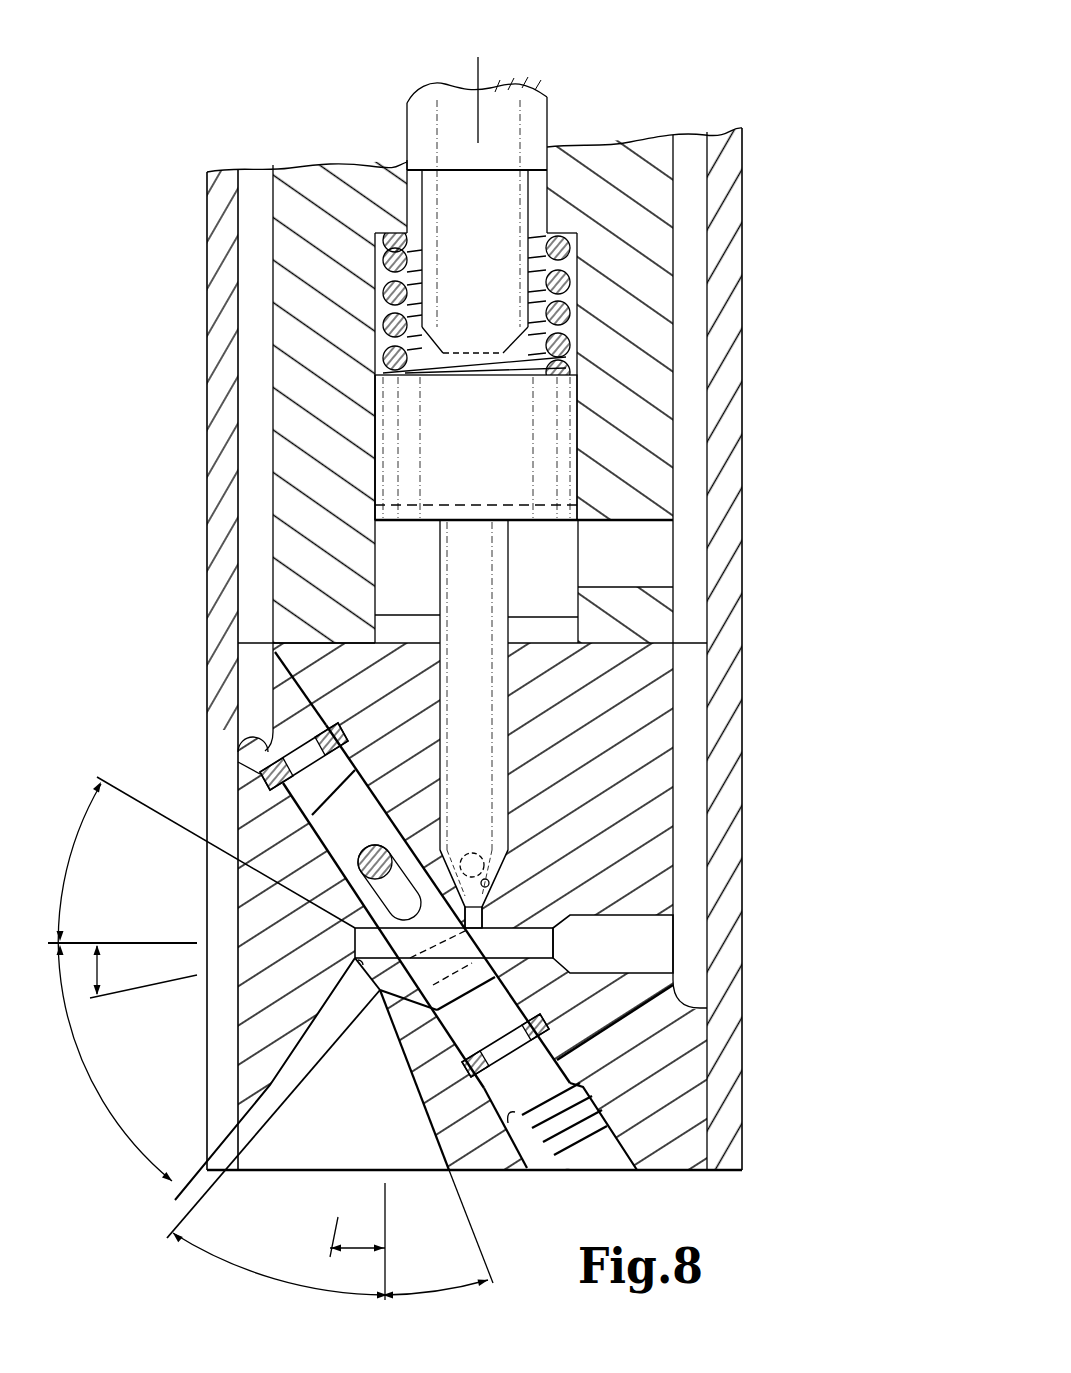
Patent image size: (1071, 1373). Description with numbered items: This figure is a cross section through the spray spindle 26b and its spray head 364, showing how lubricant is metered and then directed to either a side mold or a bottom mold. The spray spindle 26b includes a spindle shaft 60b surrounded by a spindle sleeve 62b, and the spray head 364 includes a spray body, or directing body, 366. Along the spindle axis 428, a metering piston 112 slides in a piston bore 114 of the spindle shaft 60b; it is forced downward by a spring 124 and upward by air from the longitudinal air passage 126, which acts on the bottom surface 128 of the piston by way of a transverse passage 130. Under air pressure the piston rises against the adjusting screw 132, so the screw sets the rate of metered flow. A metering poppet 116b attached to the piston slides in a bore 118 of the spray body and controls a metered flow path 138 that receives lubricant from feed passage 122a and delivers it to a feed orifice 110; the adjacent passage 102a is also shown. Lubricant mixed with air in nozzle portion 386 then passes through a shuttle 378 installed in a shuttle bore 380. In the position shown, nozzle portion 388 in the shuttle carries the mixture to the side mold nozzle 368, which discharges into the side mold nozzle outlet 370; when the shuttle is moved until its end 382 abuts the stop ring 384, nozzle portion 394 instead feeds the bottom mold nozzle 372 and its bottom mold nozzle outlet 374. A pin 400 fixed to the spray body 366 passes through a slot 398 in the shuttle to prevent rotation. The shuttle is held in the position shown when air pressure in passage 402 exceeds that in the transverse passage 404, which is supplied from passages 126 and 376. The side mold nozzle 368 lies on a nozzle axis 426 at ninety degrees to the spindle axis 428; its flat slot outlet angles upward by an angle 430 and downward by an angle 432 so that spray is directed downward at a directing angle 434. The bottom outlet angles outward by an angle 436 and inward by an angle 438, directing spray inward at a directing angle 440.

The spray spindle 26b is at (228, 18).
The spindle axis 428 is at (478, 57).
The adjusting screw 132 is at (547, 116).
The spindle sleeve 62b is at (218, 156).
The spindle shaft 60b is at (303, 151).
The passage 402 is at (240, 262).
The spring 124 is at (567, 258).
The air passage 126 is at (700, 260).
The piston bore 114 is at (378, 456).
The metering piston 112 is at (484, 459).
The bottom surface 128 is at (513, 522).
The transverse passage 130 is at (665, 558).
The passage 376 is at (698, 674).
The bore 118 is at (508, 680).
The metering poppet 116b is at (508, 714).
The stop ring 384 is at (315, 722).
The shuttle bore 380 is at (238, 752).
The end 382 is at (357, 770).
The feed passage 122a is at (480, 856).
The angle 430 is at (209, 852).
The shuttle 378 is at (312, 815).
The pin 400 is at (350, 878).
The metered flow path 138 is at (492, 885).
The nozzle portion 386 is at (550, 928).
The passage 102a is at (612, 915).
The nozzle axis 426 is at (168, 942).
The feed orifice 110 is at (485, 918).
The slot 398 is at (355, 930).
The directing angle 434 is at (103, 980).
The side mold nozzle 368 is at (355, 960).
The nozzle portion 388 is at (497, 958).
The nozzle portion 394 is at (498, 1008).
The side mold nozzle outlet 370 is at (286, 1042).
The bottom mold nozzle 372 is at (391, 1008).
The transverse passage 404 is at (638, 1030).
The angle 432 is at (170, 1180).
The bottom mold nozzle outlet 374 is at (356, 1152).
The spray body 366 is at (692, 1172).
The directing angle 440 is at (362, 1247).
The spray head 364 is at (135, 1216).
The angle 436 is at (300, 1288).
The angle 438 is at (445, 1288).